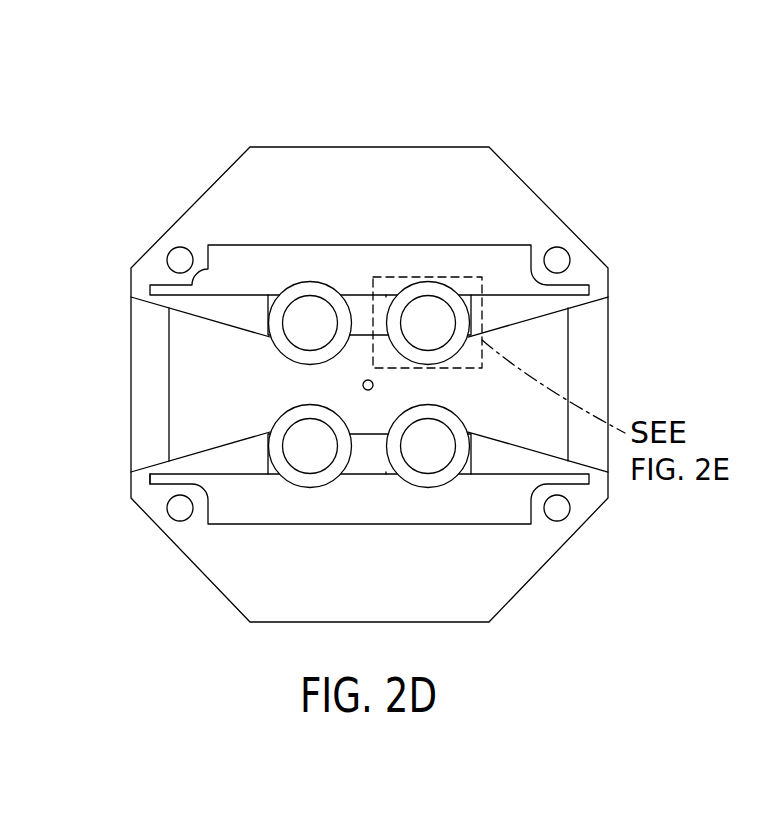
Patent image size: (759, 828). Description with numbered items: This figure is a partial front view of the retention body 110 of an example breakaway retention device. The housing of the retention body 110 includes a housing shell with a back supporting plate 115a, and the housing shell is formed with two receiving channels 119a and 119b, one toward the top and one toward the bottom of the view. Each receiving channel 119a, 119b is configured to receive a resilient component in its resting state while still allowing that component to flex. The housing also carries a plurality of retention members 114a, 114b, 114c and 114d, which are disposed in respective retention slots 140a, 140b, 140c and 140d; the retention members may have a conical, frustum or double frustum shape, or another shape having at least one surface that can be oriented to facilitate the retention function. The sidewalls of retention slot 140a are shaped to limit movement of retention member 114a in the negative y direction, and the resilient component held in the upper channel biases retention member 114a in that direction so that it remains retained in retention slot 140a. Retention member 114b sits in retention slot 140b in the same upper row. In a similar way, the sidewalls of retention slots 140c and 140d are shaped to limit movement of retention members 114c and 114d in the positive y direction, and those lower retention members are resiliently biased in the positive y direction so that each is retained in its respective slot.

The retention body 110 is at (127, 200).
The retention member 114a is at (292, 337).
The retention member 114b is at (427, 305).
The retention member 114c is at (292, 440).
The retention member 114d is at (433, 460).
The back supporting plate 115a is at (142, 480).
The receiving channel 119a is at (235, 262).
The receiving channel 119b is at (270, 510).
The retention slot 140a is at (251, 309).
The retention slot 140b is at (379, 279).
The retention slot 140c is at (278, 494).
The retention slot 140d is at (399, 494).